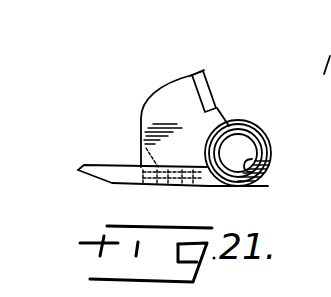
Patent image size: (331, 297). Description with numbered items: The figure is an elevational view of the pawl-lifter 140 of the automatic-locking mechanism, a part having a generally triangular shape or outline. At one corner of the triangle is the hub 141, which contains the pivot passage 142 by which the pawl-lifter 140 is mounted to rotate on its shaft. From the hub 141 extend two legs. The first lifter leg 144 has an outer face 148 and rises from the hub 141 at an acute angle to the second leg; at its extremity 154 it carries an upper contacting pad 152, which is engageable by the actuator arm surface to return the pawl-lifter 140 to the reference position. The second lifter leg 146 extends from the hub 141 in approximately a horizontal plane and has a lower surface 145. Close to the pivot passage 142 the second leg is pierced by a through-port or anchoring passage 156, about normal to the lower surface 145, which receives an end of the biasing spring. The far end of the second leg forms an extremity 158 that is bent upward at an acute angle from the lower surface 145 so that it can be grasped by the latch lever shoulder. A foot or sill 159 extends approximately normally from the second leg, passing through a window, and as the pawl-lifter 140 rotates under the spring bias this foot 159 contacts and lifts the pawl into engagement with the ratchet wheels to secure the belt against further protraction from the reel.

The pawl-lifter 140 is at (206, 58).
The hub 141 is at (268, 147).
The pivot passage 142 is at (269, 168).
The first lifter leg 144 is at (221, 115).
The lower surface 145 is at (113, 183).
The second lifter leg 146 is at (172, 192).
The outer face 148 is at (162, 112).
The contacting pad 152 is at (211, 83).
The extremity 154 is at (192, 76).
The anchoring passage 156 is at (203, 182).
The extremity 158 is at (84, 166).
The foot 159 is at (141, 145).